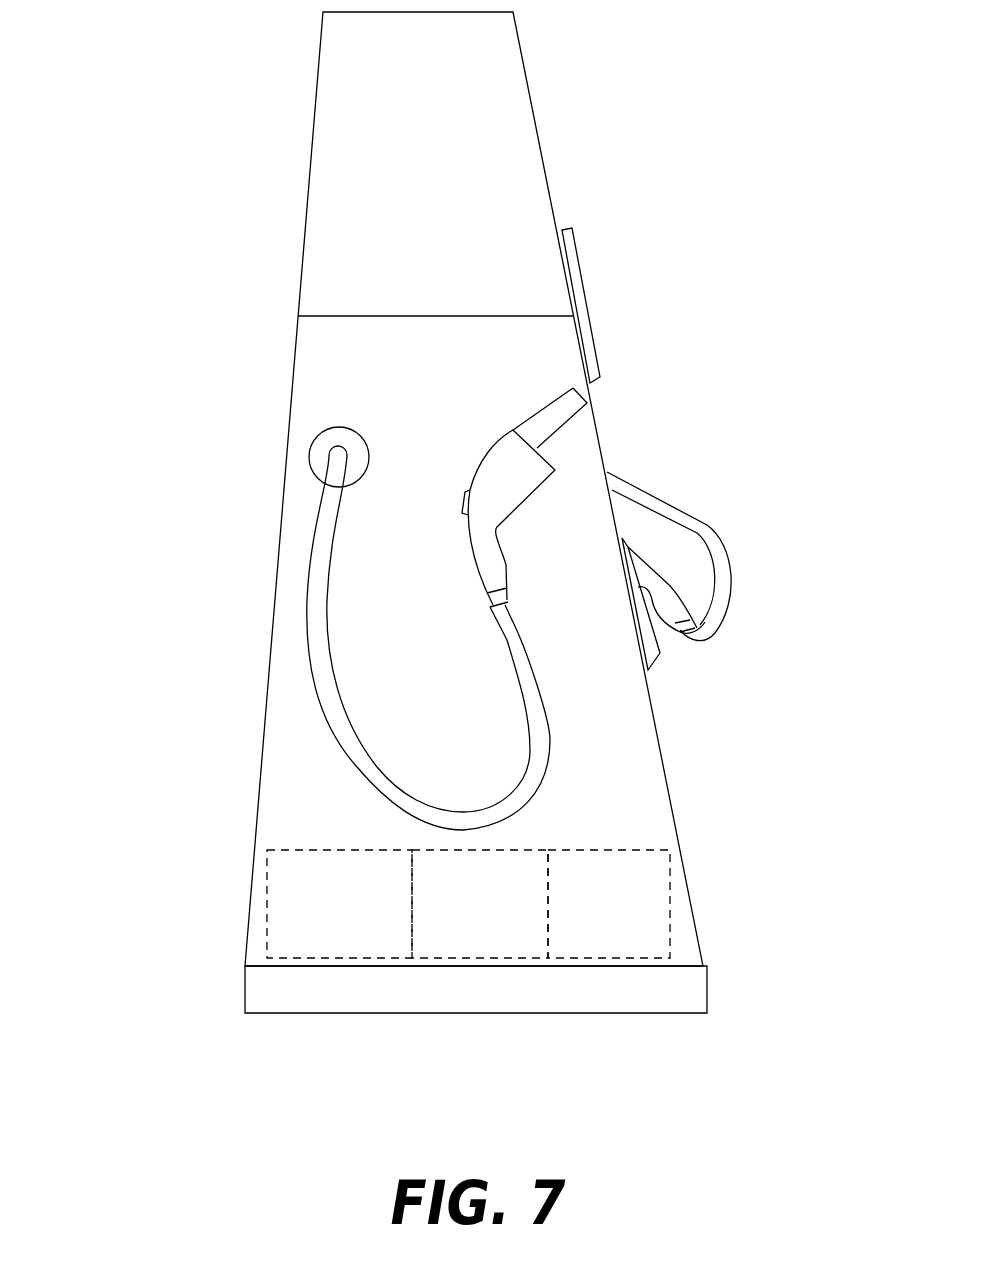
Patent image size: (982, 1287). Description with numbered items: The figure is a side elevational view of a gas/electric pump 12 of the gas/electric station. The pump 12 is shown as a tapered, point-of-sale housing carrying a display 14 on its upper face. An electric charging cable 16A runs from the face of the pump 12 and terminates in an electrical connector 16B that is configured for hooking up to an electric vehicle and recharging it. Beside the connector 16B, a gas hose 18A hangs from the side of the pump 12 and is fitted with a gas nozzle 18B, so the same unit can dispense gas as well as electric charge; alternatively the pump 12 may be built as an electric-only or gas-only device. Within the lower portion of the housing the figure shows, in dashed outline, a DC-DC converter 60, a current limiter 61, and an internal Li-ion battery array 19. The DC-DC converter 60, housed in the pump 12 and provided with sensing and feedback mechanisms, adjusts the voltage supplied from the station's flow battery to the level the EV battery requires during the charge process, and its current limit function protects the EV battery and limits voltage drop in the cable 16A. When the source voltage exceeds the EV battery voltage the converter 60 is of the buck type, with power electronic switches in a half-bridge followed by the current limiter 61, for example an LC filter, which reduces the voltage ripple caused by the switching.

The gas/electric pump 12 is at (292, 343).
The display 14 is at (588, 302).
The electric charging cable 16A is at (556, 698).
The electrical connector 16B is at (558, 417).
The gas hose 18A is at (697, 530).
The gas nozzle 18B is at (665, 587).
The internal Li-ion battery array 19 is at (660, 876).
The DC-DC converter 60 is at (293, 882).
The current limiter 61 is at (450, 953).